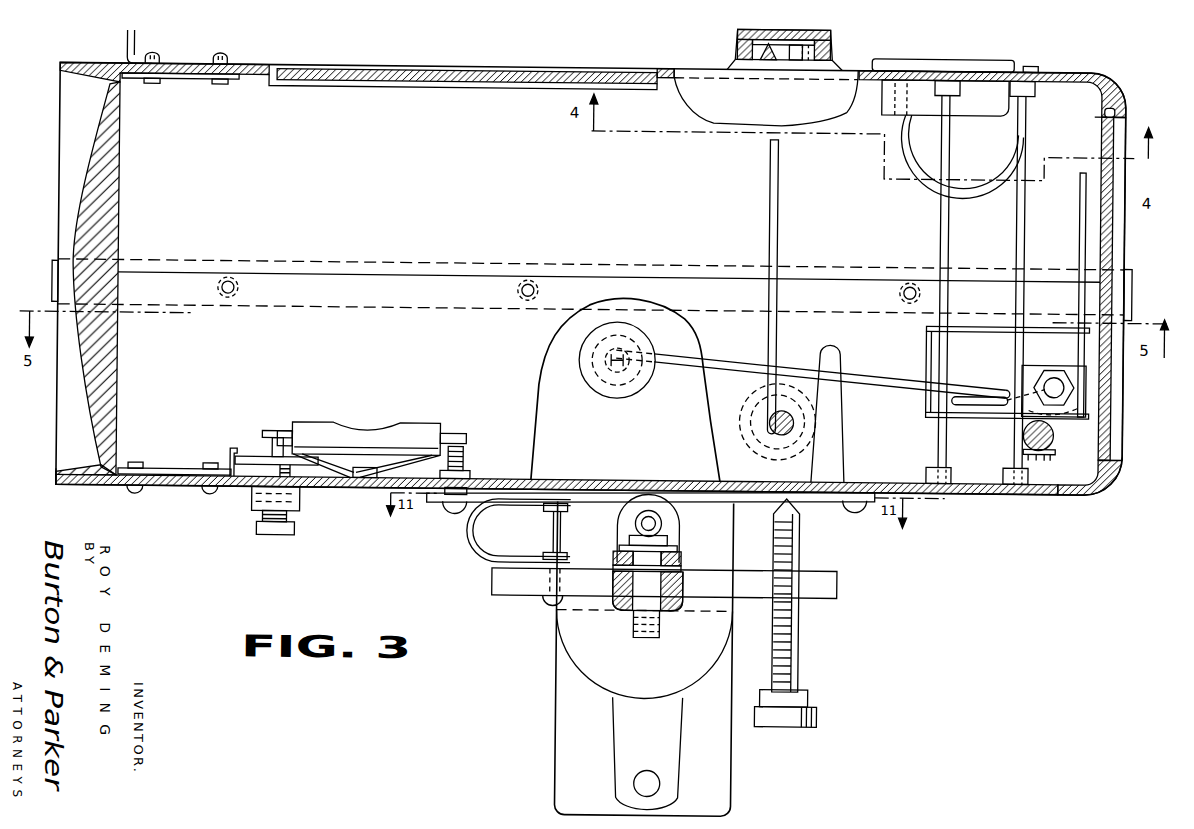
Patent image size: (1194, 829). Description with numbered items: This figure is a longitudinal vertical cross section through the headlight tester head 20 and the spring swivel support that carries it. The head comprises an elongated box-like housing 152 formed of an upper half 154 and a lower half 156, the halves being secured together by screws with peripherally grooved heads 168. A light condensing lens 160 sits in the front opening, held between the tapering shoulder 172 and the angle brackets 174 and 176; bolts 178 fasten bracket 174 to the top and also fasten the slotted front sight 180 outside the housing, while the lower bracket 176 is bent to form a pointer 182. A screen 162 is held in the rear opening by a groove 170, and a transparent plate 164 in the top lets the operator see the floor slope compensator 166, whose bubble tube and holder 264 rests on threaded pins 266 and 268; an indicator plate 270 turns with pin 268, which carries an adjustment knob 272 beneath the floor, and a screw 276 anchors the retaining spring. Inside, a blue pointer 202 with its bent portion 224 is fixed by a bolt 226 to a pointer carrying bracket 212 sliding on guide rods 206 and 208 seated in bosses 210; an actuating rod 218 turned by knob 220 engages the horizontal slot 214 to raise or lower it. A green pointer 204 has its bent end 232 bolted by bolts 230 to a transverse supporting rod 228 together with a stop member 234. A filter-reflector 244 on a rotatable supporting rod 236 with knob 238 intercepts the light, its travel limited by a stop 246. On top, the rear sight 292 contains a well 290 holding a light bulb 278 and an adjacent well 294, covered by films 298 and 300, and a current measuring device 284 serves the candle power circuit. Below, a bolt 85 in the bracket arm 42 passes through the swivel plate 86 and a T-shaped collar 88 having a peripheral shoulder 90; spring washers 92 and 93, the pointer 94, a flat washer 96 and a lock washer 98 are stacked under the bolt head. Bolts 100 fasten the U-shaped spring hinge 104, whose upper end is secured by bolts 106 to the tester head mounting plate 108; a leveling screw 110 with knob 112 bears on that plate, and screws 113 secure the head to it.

The tester head 20 is at (975, 490).
The bracket arm 42 is at (574, 637).
The bolt 85 is at (660, 537).
The swivel plate 86 is at (838, 582).
The collar 88 is at (683, 585).
The peripheral shoulder 90 is at (680, 562).
The spring washer 92 is at (610, 572).
The second spring washer 93 is at (616, 554).
The pointer 94 is at (676, 550).
The flat washer 96 is at (622, 546).
The lock washer 98 is at (632, 537).
The bolts 100 is at (549, 599).
The U-shaped spring hinge 104 is at (482, 544).
The bolts 106 is at (548, 509).
The tester head mounting plate 108 is at (436, 503).
The leveling screw 110 is at (800, 640).
The knob 112 is at (818, 712).
The screws 113 is at (458, 514).
The housing 152 is at (1086, 70).
The upper half 154 is at (1110, 107).
The lower half 156 is at (1097, 490).
The light condensing lens 160 is at (112, 230).
The screen 162 is at (1110, 145).
The transparent plate 164 is at (523, 73).
The floor slope compensator 166 is at (444, 430).
The screws 168 is at (537, 281).
The groove 170 is at (1126, 117).
The tapering shoulder 172 is at (70, 471).
The angle bracket 174 is at (180, 84).
The lower bracket 176 is at (170, 472).
The bolts 178 is at (151, 89).
The slotted front sight 180 is at (134, 54).
The pointer 182 is at (230, 452).
The pointer 202 is at (1087, 392).
The pointer 204 is at (1081, 212).
The guide rod 206 is at (938, 444).
The guide rod 208 is at (1014, 435).
The bosses 210 is at (950, 88).
The pointer carrying bracket 212 is at (955, 343).
The horizontal slot 214 is at (963, 404).
The actuating rod 218 is at (820, 372).
The knob 220 is at (604, 384).
The angular bend 224 is at (1060, 366).
The bolt 226 is at (1046, 385).
The supporting rod 228 is at (1054, 433).
The bolts 230 is at (1062, 460).
The angularly bent end 232 is at (1020, 390).
The stop member 234 is at (1056, 448).
The filter-reflector supporting rod 236 is at (781, 436).
The knob 238 is at (760, 442).
The filter-reflector 244 is at (778, 246).
The stop 246 is at (853, 455).
The bubble tube and holder 264 is at (372, 423).
The threaded pin 266 is at (467, 470).
The threaded pin 268 is at (274, 450).
The indicator plate 270 is at (250, 462).
The adjustment knob 272 is at (277, 533).
The screw 276 is at (365, 473).
The light bulb 278 is at (762, 58).
The current measuring device 284 is at (975, 58).
The well 290 is at (738, 54).
The rear sight 292 is at (828, 53).
The well 294 is at (813, 46).
The film 298 is at (737, 47).
The film 300 is at (794, 58).